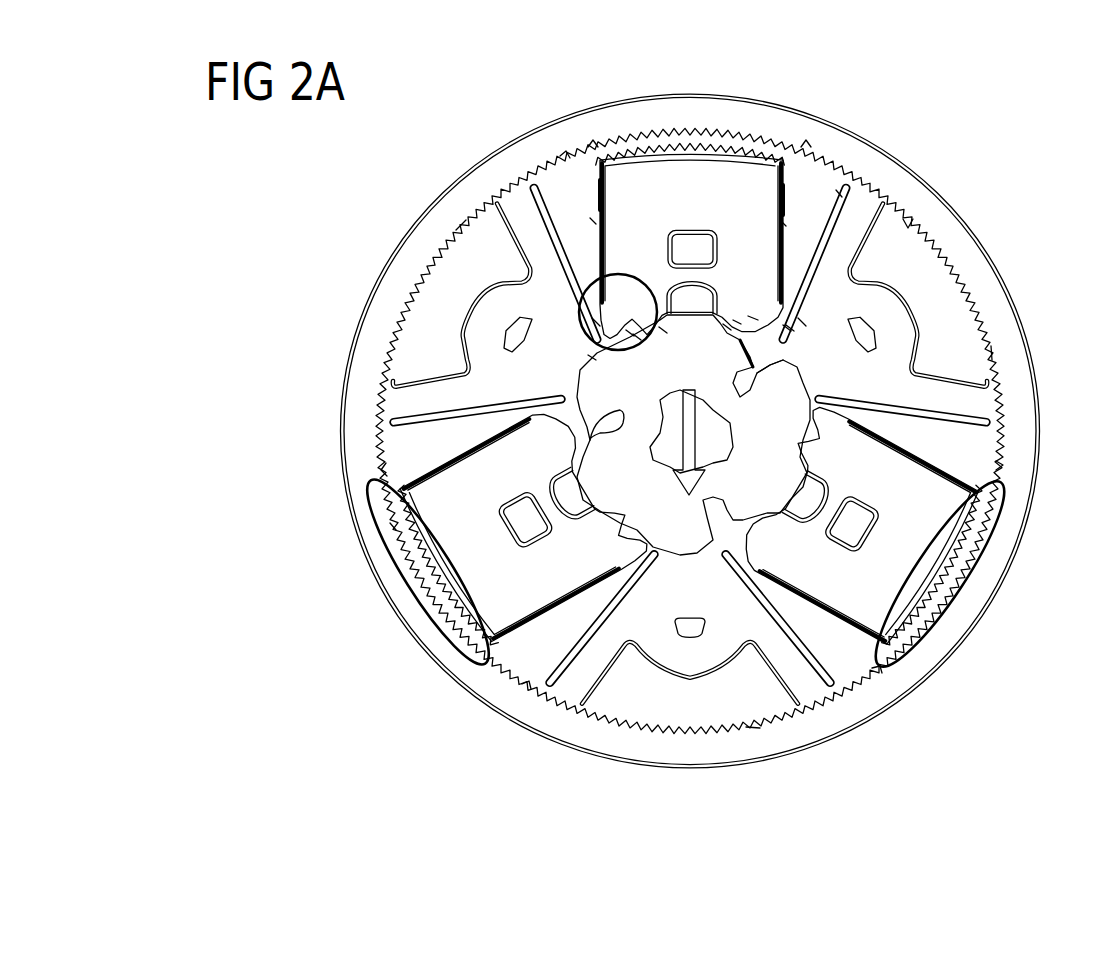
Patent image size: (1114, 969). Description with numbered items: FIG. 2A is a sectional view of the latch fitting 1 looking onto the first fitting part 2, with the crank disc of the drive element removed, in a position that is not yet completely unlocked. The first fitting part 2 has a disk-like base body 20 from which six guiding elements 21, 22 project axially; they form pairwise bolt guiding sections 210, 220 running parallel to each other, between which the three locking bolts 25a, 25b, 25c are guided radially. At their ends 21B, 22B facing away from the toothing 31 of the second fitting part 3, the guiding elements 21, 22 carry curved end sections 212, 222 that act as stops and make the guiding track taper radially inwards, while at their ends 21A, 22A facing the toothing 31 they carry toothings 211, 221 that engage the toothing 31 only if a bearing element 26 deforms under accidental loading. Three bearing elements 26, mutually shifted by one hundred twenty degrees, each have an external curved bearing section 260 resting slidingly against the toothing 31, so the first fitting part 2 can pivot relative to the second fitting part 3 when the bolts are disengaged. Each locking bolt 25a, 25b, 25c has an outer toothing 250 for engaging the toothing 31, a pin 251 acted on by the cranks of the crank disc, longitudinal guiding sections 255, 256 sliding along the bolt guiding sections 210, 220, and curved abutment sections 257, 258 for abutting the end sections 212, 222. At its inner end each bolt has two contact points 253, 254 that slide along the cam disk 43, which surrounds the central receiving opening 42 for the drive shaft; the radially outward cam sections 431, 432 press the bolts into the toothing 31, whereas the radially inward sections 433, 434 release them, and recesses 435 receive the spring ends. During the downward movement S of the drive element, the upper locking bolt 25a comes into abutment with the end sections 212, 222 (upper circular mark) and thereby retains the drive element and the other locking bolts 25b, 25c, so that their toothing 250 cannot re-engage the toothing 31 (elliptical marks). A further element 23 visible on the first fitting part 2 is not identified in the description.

The latch fitting 1 is at (980, 104).
The first fitting part 2 is at (860, 213).
The second fitting part 3 is at (907, 180).
The base body 20 is at (807, 687).
The guiding element 21 is at (583, 152).
The end of guiding element 21A is at (563, 155).
The end of guiding element 21B is at (597, 322).
The guiding element 22 is at (823, 180).
The end of guiding element 22A is at (840, 193).
The end of guiding element 22B is at (803, 322).
The cutout 23 is at (480, 340).
The bearing element 26 is at (470, 260).
The toothing 31 is at (910, 225).
The central receiving opening 42 is at (670, 452).
The cam disk 43 is at (770, 393).
The movement S is at (690, 432).
The bolt guiding section 210 is at (600, 195).
The toothing 211 is at (592, 150).
The end section 212 is at (600, 318).
The bolt guiding section 220 is at (777, 200).
The toothing 221 is at (806, 150).
The end section 222 is at (753, 317).
The locking bolt 25a is at (690, 168).
The locking bolt 25b is at (933, 553).
The locking bolt 25c is at (468, 602).
The toothing 250 is at (742, 140).
The pin 251 is at (700, 297).
The contact point 253 is at (637, 337).
The contact point 254 is at (727, 327).
The longitudinal guiding section 255 is at (592, 220).
The longitudinal guiding section 256 is at (783, 223).
The abutment section 257 is at (630, 333).
The abutment section 258 is at (787, 328).
The bearing section 260 is at (460, 225).
The cam section 431 is at (592, 357).
The cam section 432 is at (737, 317).
The section of guiding contour 433 is at (663, 330).
The section of guiding contour 434 is at (790, 328).
The recess 435 is at (763, 395).